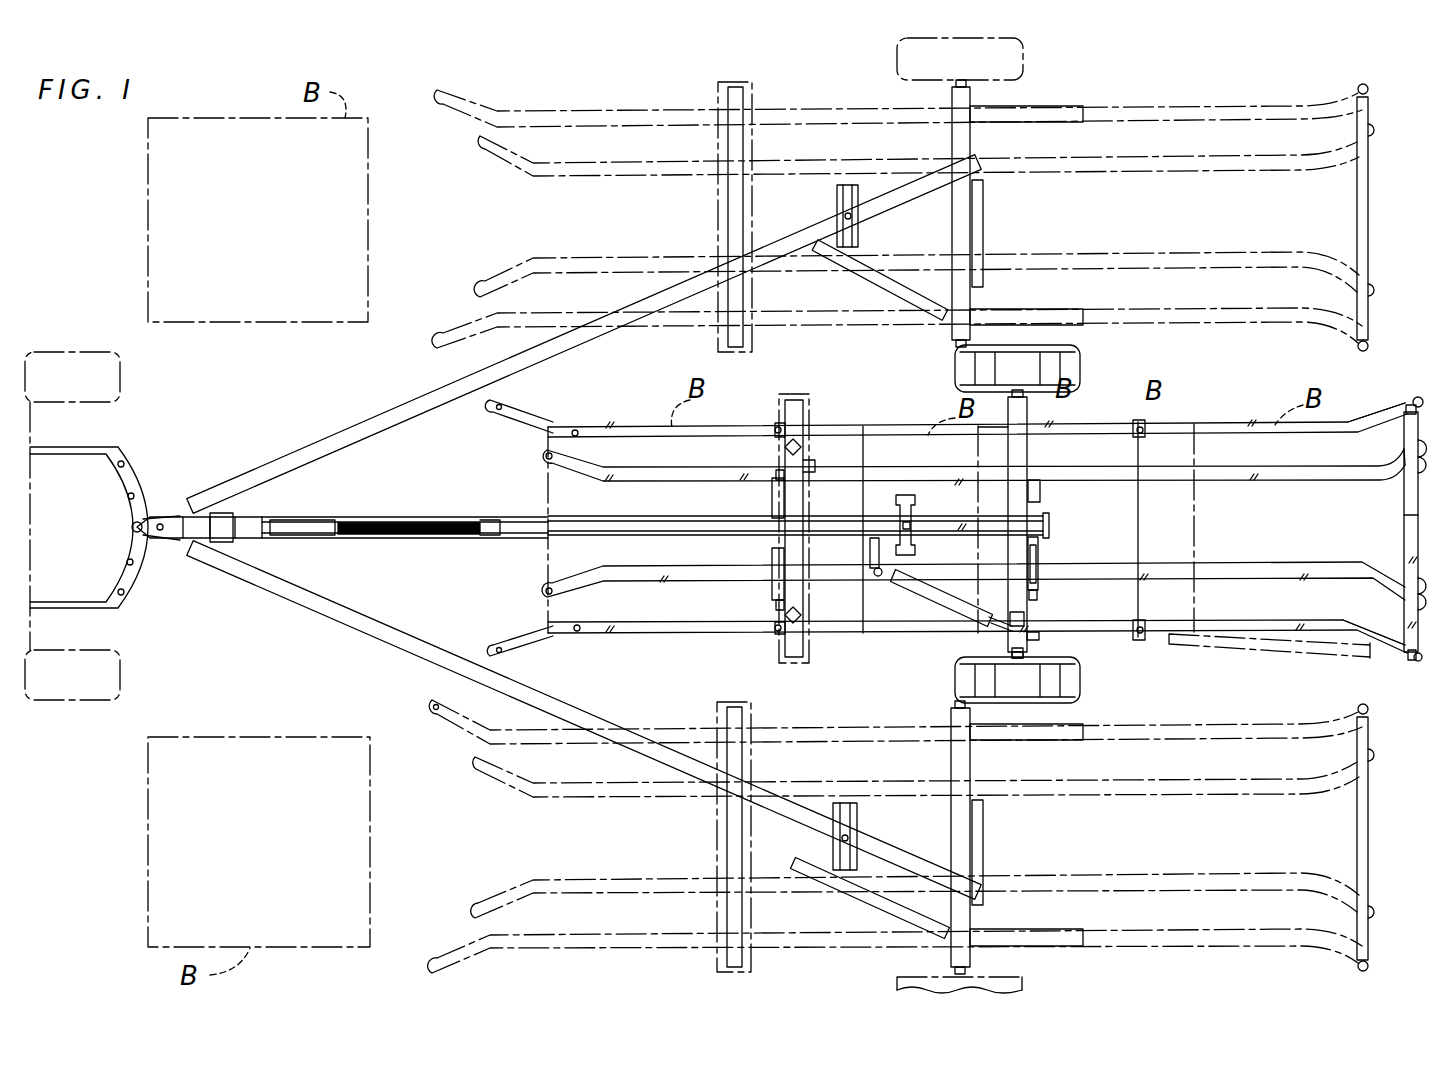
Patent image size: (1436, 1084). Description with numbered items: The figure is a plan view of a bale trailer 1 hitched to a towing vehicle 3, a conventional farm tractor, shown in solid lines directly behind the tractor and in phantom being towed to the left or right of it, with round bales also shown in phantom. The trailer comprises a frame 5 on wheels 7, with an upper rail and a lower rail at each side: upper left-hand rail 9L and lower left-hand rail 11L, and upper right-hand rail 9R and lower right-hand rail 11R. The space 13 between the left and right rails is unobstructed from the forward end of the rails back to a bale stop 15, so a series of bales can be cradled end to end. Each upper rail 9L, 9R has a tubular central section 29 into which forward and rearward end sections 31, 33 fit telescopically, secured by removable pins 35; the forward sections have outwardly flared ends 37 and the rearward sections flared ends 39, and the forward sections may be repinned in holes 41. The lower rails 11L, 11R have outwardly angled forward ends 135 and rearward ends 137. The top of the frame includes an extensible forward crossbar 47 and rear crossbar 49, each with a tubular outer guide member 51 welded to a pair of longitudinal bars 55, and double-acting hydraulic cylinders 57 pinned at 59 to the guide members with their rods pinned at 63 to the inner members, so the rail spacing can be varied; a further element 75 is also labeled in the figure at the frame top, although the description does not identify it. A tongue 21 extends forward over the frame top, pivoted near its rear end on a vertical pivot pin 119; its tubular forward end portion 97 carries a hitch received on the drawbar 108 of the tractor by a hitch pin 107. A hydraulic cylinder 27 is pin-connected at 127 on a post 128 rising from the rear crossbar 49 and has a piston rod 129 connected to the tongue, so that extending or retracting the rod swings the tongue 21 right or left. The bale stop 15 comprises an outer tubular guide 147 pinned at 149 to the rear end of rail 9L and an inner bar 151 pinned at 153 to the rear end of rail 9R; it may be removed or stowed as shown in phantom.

The trailer 1 is at (1213, 93).
The towing vehicle 3 is at (48, 703).
The frame 5 is at (722, 97).
The wheels 7 is at (1025, 70).
The upper right-hand rail 9R is at (680, 128).
The upper left-hand rail 9L is at (600, 315).
The lower right-hand rail 11R is at (660, 180).
The lower left-hand rail 11L is at (655, 258).
The space between the left-hand and right-hand rails 13 is at (1168, 542).
The bale stop 15 is at (1355, 222).
The tongue 21 is at (312, 440).
The hydraulic cylinder 27 is at (952, 600).
The central section 29 is at (845, 425).
The forward end section 31 is at (648, 425).
The rearward end section 33 is at (1380, 404).
The pins 35 is at (138, 540).
The flared forward ends 37 is at (525, 415).
The flared rearward ends 39 is at (1408, 398).
The holes 41 is at (578, 438).
The forward crossbar 47 is at (822, 465).
The rear crossbar 49 is at (1030, 460).
The outer guide member 51 is at (770, 552).
The longitudinal bars 55 is at (893, 500).
The double-acting hydraulic cylinders 57 is at (1045, 560).
The pin connection 59 is at (780, 600).
The pin connection 63 is at (1095, 483).
The cross slide bar 75 is at (800, 398).
The tubular forward end portion 97 is at (268, 518).
The hitch pin 107 is at (132, 527).
The drawbar 108 is at (145, 582).
The vertical pivot pin 119 is at (950, 470).
The pin connection 127 is at (1015, 655).
The post 128 is at (1032, 640).
The piston rod 129 is at (900, 580).
The outwardly angled forward ends 135 is at (540, 465).
The outwardly angled rearward ends 137 is at (1415, 485).
The outer tubular guide 147 is at (1406, 520).
The pin 149 is at (1389, 675).
The inner bar 151 is at (1404, 437).
The pin 153 is at (805, 575).